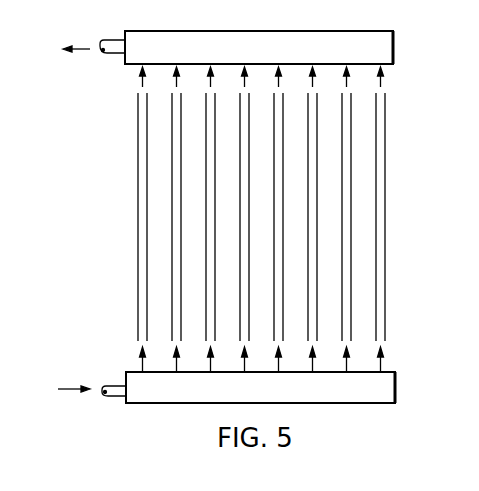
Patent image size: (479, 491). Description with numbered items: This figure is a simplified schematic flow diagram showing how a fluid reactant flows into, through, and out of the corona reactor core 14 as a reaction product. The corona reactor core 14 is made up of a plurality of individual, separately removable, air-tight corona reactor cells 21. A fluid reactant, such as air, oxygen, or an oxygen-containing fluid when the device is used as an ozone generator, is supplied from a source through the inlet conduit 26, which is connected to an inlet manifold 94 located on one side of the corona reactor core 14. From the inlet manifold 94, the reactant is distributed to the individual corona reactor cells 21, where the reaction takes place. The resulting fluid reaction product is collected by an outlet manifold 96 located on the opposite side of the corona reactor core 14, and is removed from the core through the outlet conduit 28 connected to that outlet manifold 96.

The corona reactor core 14 is at (404, 197).
The corona reactor cells 21 is at (355, 150).
The inlet conduit 26 is at (113, 396).
The outlet conduit 28 is at (110, 53).
The inlet manifold 94 is at (343, 397).
The outlet manifold 96 is at (287, 35).